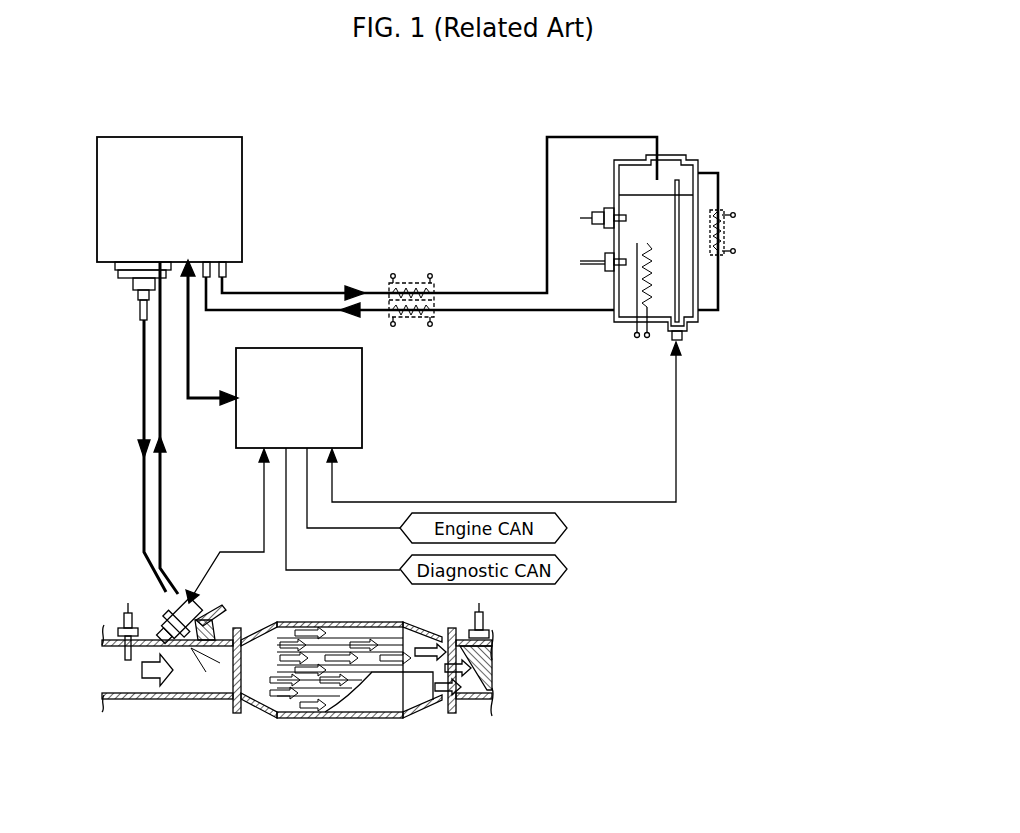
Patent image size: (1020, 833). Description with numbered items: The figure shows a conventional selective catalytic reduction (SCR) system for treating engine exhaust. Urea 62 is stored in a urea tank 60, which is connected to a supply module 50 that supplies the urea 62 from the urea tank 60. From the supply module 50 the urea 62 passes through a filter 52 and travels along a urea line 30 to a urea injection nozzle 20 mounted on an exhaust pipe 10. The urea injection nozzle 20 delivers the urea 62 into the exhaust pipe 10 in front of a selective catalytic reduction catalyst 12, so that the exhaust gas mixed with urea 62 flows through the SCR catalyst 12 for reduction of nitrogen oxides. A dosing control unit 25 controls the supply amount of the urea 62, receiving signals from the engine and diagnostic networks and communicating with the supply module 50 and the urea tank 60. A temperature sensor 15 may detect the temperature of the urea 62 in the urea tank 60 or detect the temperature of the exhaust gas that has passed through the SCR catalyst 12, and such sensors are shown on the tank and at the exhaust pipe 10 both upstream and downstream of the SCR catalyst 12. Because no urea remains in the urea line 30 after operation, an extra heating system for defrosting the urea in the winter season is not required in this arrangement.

The exhaust pipe 10 is at (172, 700).
The selective catalytic reduction catalyst 12 is at (370, 716).
The temperature sensor 15 is at (580, 262).
The urea injection nozzle 20 is at (206, 617).
The dosing control unit 25 is at (366, 398).
The urea line 30 is at (158, 420).
The supply module 50 is at (162, 145).
The filter 52 is at (122, 275).
The urea tank 60 is at (627, 163).
The urea 62 is at (660, 205).